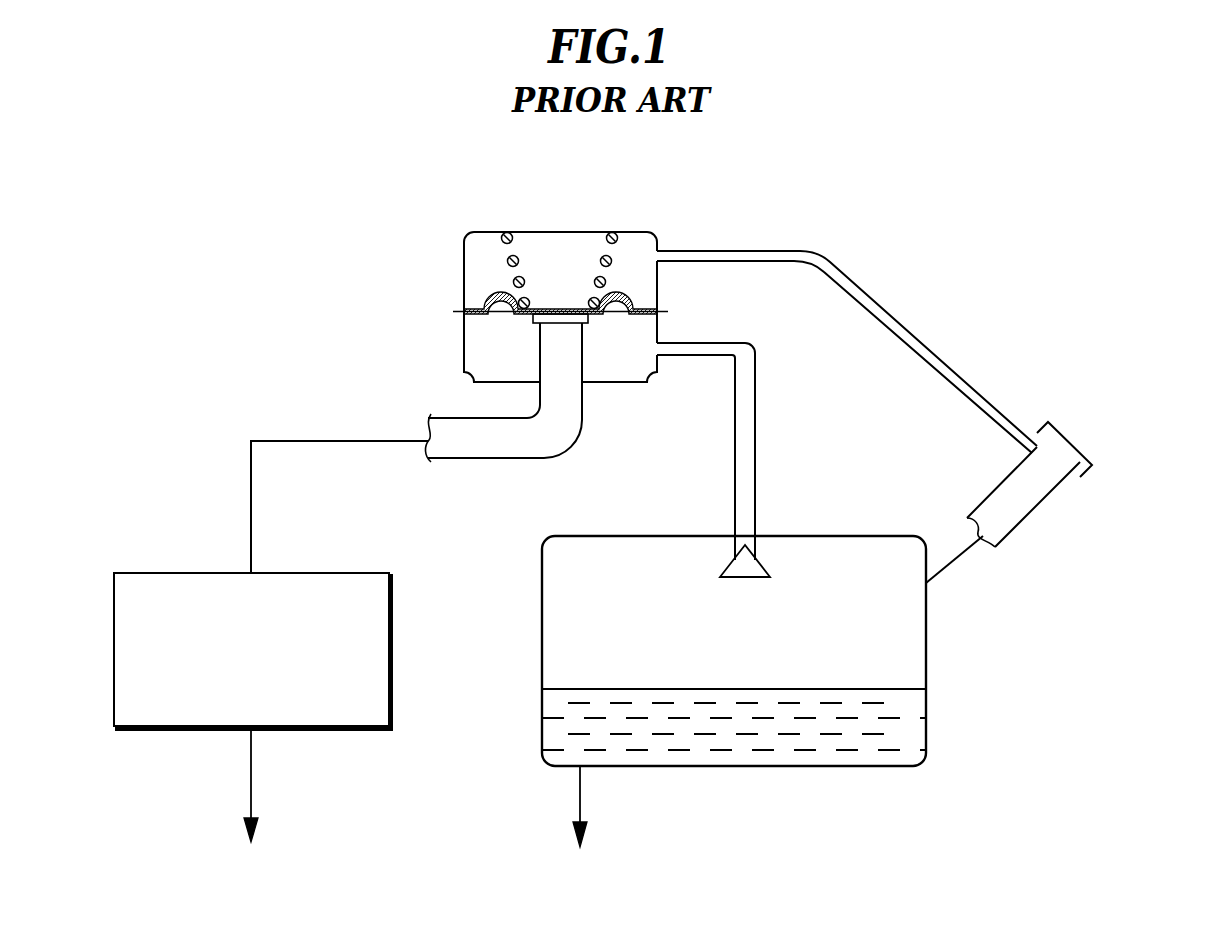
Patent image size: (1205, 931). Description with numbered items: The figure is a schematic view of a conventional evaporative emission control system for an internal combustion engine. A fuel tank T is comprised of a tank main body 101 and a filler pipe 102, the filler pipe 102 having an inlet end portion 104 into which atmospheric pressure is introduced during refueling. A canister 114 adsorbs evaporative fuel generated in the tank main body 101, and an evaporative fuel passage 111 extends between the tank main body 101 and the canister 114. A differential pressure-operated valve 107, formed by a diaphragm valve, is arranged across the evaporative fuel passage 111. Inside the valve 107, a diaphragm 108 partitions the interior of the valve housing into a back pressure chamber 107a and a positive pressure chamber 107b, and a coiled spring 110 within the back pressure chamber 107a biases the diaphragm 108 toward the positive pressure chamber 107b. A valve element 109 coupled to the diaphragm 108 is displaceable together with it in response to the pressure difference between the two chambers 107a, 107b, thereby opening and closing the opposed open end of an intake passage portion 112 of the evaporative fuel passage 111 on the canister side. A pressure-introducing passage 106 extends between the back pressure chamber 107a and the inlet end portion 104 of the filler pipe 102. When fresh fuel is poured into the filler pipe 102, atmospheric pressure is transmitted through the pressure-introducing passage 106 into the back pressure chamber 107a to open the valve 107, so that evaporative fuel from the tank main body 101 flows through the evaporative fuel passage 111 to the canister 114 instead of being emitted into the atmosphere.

The tank main body 101 is at (744, 711).
The filler pipe 102 is at (1005, 540).
The inlet end portion 104 is at (1078, 440).
The pressure-introducing passage 106 is at (772, 250).
The differential pressure-operated valve 107 is at (527, 311).
The back pressure chamber 107a is at (641, 253).
The positive pressure chamber 107b is at (607, 370).
The diaphragm 108 is at (654, 330).
The valve element 109 is at (535, 324).
The coiled spring 110 is at (516, 260).
The evaporative fuel passage 111 is at (300, 441).
The intake passage portion 112 is at (548, 459).
The canister 114 is at (167, 572).
The fuel tank T is at (541, 585).